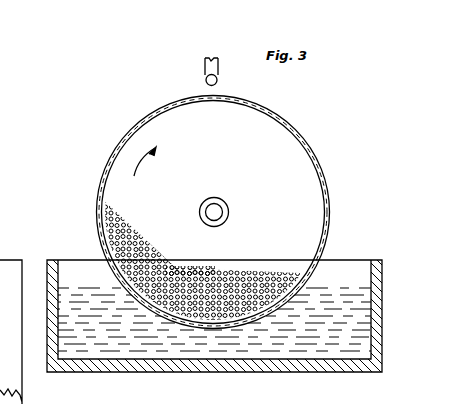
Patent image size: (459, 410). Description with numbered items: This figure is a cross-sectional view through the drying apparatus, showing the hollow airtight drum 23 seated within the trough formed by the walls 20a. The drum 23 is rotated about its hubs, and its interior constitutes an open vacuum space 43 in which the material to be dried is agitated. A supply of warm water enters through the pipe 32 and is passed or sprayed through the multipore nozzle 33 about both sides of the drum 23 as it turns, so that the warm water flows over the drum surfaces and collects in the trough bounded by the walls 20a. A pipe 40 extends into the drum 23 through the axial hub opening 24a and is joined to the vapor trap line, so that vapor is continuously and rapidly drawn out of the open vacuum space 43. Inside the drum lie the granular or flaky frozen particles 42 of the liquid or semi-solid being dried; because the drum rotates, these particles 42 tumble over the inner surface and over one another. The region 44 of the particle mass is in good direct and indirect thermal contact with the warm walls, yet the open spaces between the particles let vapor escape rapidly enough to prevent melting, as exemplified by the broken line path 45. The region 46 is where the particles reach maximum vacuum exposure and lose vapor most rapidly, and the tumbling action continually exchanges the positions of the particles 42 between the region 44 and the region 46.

The hollow airtight drum 23 is at (128, 131).
The open vacuum space 43 is at (297, 158).
The pipe 32 is at (220, 63).
The multipore nozzle 33 is at (217, 80).
The pipe 40 is at (215, 197).
The axial opening 24a is at (223, 211).
The walls 20a is at (1, 259).
The frozen particles 42 is at (110, 262).
The region 44 is at (133, 281).
The broken line path 45 is at (208, 268).
The region 46 is at (177, 268).